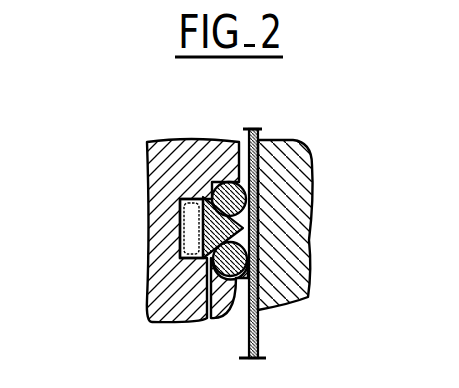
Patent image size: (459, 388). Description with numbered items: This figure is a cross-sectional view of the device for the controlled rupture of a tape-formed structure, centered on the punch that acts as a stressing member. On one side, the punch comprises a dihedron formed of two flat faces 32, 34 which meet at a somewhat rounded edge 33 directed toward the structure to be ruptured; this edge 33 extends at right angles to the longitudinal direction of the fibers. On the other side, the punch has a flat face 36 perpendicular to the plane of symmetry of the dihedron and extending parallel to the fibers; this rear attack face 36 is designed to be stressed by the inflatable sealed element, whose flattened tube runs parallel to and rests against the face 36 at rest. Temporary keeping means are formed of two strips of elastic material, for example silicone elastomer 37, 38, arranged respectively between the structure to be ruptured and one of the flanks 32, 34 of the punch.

The flat face 32 is at (258, 207).
The rounded edge 33 is at (246, 231).
The flat face 34 is at (258, 254).
The flat face 36 is at (180, 230).
The strip of elastic material 37 is at (260, 183).
The strip of elastic material 38 is at (207, 323).